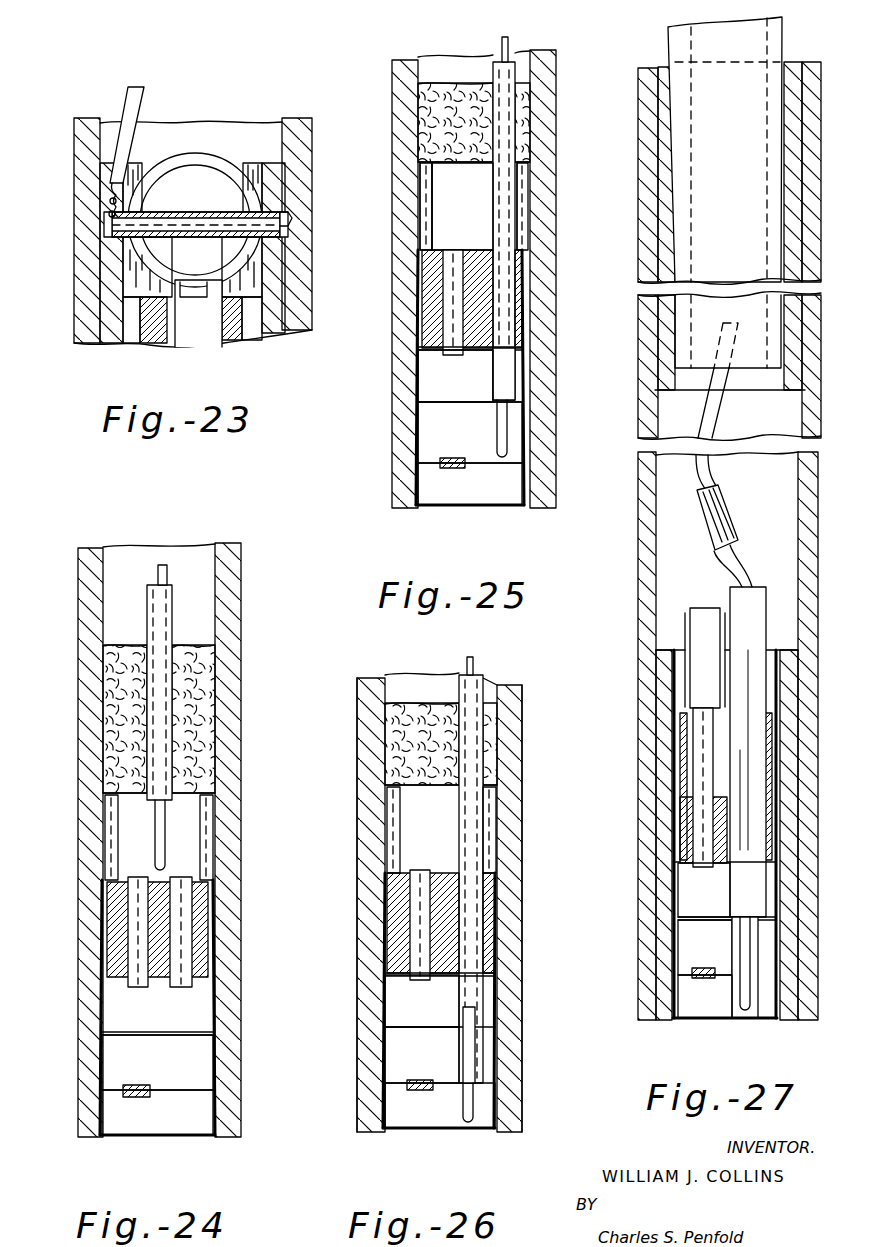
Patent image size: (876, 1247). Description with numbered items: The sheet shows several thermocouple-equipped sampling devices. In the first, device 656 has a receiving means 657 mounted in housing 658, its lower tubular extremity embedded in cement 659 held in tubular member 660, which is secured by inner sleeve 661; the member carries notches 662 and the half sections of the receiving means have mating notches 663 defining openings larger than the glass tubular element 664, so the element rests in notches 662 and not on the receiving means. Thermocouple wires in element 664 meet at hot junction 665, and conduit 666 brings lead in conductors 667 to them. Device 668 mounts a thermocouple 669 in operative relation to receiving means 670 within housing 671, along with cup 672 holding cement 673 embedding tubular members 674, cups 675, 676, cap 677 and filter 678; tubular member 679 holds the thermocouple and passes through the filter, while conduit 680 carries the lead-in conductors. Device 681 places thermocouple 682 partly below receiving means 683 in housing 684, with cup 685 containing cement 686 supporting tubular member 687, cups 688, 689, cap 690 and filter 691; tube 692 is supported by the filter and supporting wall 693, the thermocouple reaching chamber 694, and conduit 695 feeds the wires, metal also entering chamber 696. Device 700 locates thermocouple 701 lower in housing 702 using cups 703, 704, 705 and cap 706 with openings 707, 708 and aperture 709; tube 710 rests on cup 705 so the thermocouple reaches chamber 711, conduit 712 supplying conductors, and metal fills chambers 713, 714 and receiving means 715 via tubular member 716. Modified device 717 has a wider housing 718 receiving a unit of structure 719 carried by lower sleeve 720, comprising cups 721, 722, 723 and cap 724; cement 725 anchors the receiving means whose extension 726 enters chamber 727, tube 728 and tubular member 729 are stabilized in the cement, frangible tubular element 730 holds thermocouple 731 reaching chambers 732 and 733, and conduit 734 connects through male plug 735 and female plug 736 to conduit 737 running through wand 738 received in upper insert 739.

In FIG. 23, the device 656 is at (101, 118).
In FIG. 23, the housing 658 is at (302, 118).
In FIG. 23, the receiving means 657 is at (176, 158).
In FIG. 23, the mass of cement 659 is at (160, 346).
In FIG. 23, the tubular member 660 is at (135, 346).
In FIG. 23, the inner sleeve 661 is at (108, 290).
In FIG. 23, the notches 662 is at (108, 170).
In FIG. 25, the notches 662 is at (430, 196).
In FIG. 23, the mating notches 663 is at (262, 206).
In FIG. 23, the tubular element 664 is at (188, 215).
In FIG. 23, the hot junction 665 is at (276, 210).
In FIG. 25, the hot junction 665 is at (430, 202).
In FIG. 23, the conduit 666 is at (137, 98).
In FIG. 23, the lead in conductors 667 is at (110, 215).
In FIG. 24, the device 668 is at (102, 548).
In FIG. 24, the thermocouple 669 is at (160, 773).
In FIG. 24, the receiving means 670 is at (128, 820).
In FIG. 24, the housing 671 is at (90, 588).
In FIG. 24, the cup 672 is at (104, 898).
In FIG. 24, the cement 673 is at (118, 925).
In FIG. 24, the tubular members 674 is at (146, 988).
In FIG. 24, the cup 675 is at (108, 992).
In FIG. 24, the cup 676 is at (108, 1042).
In FIG. 24, the cup or cap 677 is at (108, 1105).
In FIG. 24, the filter 678 is at (115, 665).
In FIG. 24, the tubular member 679 is at (172, 595).
In FIG. 24, the conduit 680 is at (170, 570).
In FIG. 25, the device 681 is at (410, 60).
In FIG. 25, the thermocouple 682 is at (510, 360).
In FIG. 25, the receiving means 683 is at (446, 210).
In FIG. 25, the housing 684 is at (548, 108).
In FIG. 25, the cup 685 is at (535, 278).
In FIG. 25, the cement 686 is at (433, 298).
In FIG. 25, the tubular member 687 is at (440, 320).
In FIG. 25, the cup 688 is at (422, 356).
In FIG. 25, the cup 689 is at (420, 412).
In FIG. 25, the cup or cap 690 is at (530, 480).
In FIG. 25, the filter 691 is at (437, 105).
In FIG. 25, the elongated tube 692 is at (484, 60).
In FIG. 25, the supporting wall 693 is at (484, 197).
In FIG. 25, the chamber 694 is at (440, 440).
In FIG. 25, the conduit 695 is at (509, 46).
In FIG. 25, the chamber 696 is at (440, 386).
In FIG. 26, the device 700 is at (520, 700).
In FIG. 26, the thermocouple 701 is at (472, 1055).
In FIG. 26, the housing 702 is at (520, 731).
In FIG. 26, the cup 703 is at (385, 905).
In FIG. 26, the cup 704 is at (390, 985).
In FIG. 26, the cup 705 is at (395, 1030).
In FIG. 26, the cup or cap 706 is at (378, 1120).
In FIG. 26, the opening 707 is at (452, 978).
In FIG. 26, the opening 708 is at (452, 1030).
In FIG. 26, the aperture 709 is at (458, 1090).
In FIG. 26, the tube 710 is at (485, 677).
In FIG. 26, the chamber 711 is at (408, 1123).
In FIG. 26, the conduit 712 is at (475, 660).
In FIG. 26, the chamber 713 is at (400, 1065).
In FIG. 26, the chamber 714 is at (405, 1010).
In FIG. 26, the receiving means 715 is at (412, 820).
In FIG. 26, the tubular member 716 is at (420, 895).
In FIG. 27, the modified device 717 is at (640, 68).
In FIG. 27, the housing 718 is at (816, 62).
In FIG. 27, the structure 719 is at (680, 640).
In FIG. 27, the lower sleeve or insert 720 is at (665, 645).
In FIG. 27, the cup 721 is at (782, 792).
In FIG. 27, the cup 722 is at (678, 862).
In FIG. 27, the cup 723 is at (680, 938).
In FIG. 27, the cup or cap 724 is at (680, 990).
In FIG. 27, the cement / receiving means 725 is at (710, 606).
In FIG. 27, the tubular member or extension 726 is at (700, 812).
In FIG. 27, the chamber 727 is at (690, 882).
In FIG. 27, the cylindrical tube 728 is at (752, 625).
In FIG. 27, the tubular member 729 is at (770, 710).
In FIG. 27, the tubular element 730 is at (760, 935).
In FIG. 27, the thermocouple 731 is at (750, 988).
In FIG. 27, the chamber 732 is at (690, 948).
In FIG. 27, the chamber 733 is at (710, 1004).
In FIG. 27, the conduit 734 is at (746, 560).
In FIG. 27, the male plug 735 is at (728, 530).
In FIG. 27, the female plug 736 is at (715, 500).
In FIG. 27, the conduit 737 is at (716, 410).
In FIG. 27, the tubular wand or handle 738 is at (784, 32).
In FIG. 27, the upper tubular insert or sleeve 739 is at (795, 105).